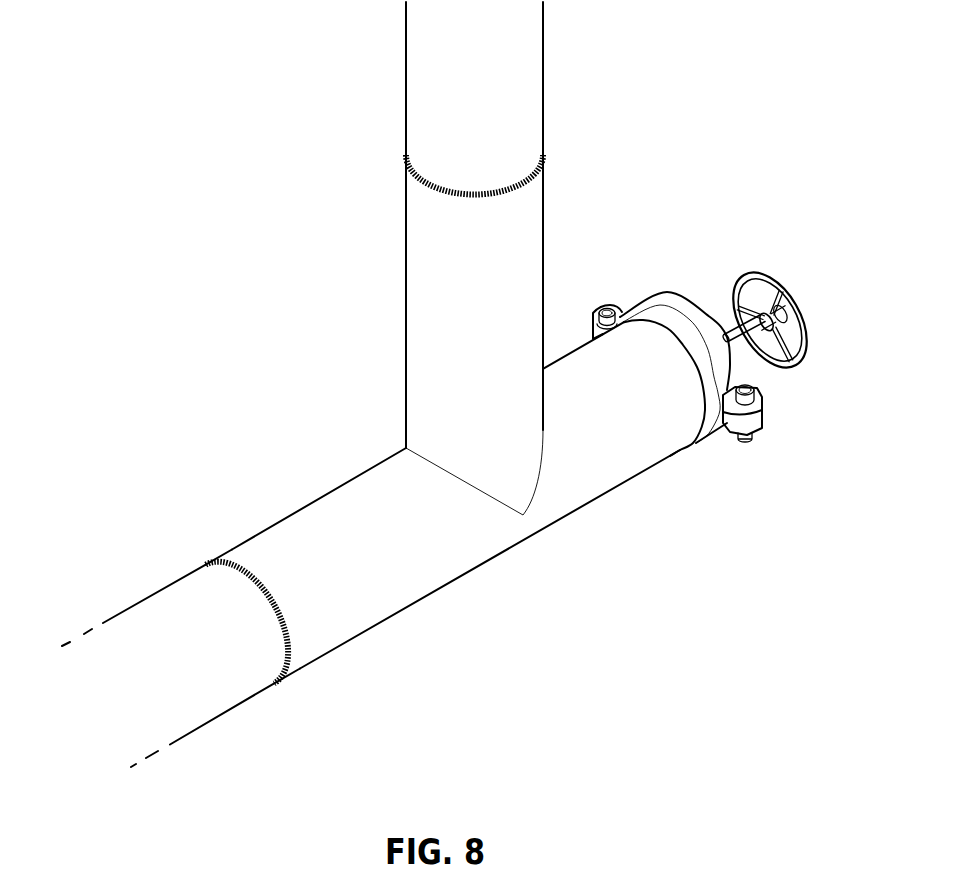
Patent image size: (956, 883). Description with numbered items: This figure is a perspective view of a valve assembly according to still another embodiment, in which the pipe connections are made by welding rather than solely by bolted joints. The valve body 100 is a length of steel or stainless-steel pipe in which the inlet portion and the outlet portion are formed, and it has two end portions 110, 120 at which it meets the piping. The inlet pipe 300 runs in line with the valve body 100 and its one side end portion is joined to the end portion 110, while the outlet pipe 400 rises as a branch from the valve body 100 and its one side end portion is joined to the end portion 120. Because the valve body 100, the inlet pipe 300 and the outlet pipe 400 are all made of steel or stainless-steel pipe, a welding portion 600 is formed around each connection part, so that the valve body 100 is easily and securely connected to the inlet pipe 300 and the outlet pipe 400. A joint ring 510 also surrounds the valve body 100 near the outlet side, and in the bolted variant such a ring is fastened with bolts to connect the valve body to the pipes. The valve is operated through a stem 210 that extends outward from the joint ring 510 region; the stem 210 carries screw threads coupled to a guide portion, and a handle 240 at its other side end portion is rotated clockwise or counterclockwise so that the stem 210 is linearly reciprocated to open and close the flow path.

The valve body 100 is at (455, 564).
The end portion 110 is at (288, 657).
The end portion 120 is at (538, 186).
The stem 210 is at (732, 291).
The handle 240 is at (765, 268).
The inlet pipe 300 is at (208, 712).
The outlet pipe 400 is at (530, 63).
The joint ring 510 is at (663, 297).
The welding portion 600 is at (544, 162).